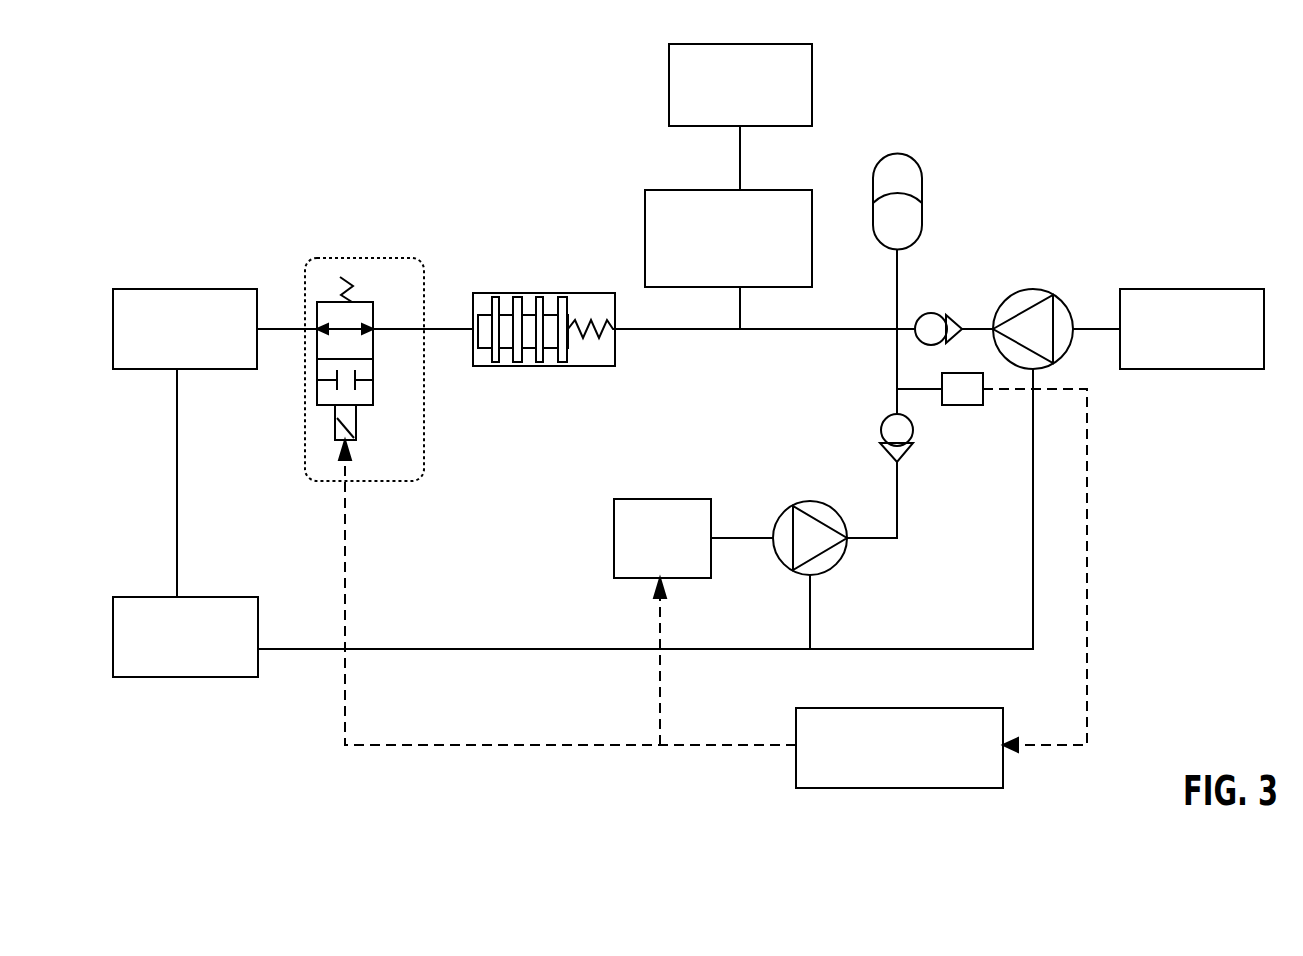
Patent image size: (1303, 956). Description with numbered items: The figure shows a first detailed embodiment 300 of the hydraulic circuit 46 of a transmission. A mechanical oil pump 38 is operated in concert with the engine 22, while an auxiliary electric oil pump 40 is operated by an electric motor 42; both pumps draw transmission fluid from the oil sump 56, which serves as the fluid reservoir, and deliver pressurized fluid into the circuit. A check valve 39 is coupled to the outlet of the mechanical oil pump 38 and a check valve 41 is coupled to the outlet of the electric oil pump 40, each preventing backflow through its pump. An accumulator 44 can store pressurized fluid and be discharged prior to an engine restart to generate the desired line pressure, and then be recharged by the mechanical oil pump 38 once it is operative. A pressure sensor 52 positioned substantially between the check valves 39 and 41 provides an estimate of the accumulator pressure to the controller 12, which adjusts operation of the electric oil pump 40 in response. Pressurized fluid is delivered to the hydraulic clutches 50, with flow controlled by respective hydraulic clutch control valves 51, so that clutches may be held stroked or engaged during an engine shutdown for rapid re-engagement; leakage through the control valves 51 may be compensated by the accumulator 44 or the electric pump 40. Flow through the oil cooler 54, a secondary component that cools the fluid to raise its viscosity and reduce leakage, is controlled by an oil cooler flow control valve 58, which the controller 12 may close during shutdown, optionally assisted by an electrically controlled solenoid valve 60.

The first detailed embodiment of the hydraulic circuit 300 is at (1220, 84).
The controller 12 is at (927, 708).
The engine 22 is at (1227, 289).
The mechanical oil pump 38 is at (1030, 290).
The check valve 39 is at (927, 312).
The auxiliary electric oil pump 40 is at (815, 503).
The check valve 41 is at (900, 458).
The electric motor 42 is at (650, 498).
The accumulator 44 is at (912, 158).
The hydraulic circuit 46 is at (381, 303).
The hydraulic clutches 50 is at (784, 44).
The hydraulic clutch control valves 51 is at (784, 190).
The pressure sensor 52 is at (992, 562).
The oil cooler 54 is at (197, 289).
The oil sump 56 is at (197, 597).
The oil cooler flow control valve 58 is at (523, 293).
The solenoid valve 60 is at (360, 302).